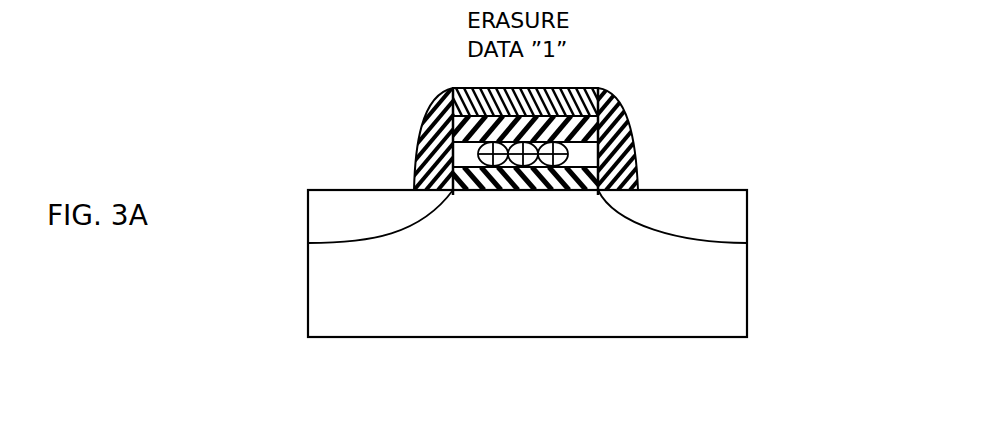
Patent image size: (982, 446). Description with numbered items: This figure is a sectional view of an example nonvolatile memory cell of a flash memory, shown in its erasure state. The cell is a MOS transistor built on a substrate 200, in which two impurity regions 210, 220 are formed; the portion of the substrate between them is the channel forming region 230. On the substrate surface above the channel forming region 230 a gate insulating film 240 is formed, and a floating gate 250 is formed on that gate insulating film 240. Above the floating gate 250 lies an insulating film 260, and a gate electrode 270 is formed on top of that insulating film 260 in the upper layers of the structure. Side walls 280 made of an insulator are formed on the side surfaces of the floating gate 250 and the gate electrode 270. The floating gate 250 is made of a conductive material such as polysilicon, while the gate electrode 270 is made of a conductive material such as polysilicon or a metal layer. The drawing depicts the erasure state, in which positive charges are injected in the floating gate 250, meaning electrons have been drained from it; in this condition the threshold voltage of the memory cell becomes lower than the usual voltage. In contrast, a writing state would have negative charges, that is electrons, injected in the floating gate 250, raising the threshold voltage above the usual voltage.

The substrate 200 is at (732, 323).
The impurity region 210 is at (323, 235).
The impurity region 220 is at (732, 221).
The channel forming region 230 is at (507, 234).
The gate insulating film 240 is at (628, 175).
The floating gate 250 is at (630, 148).
The insulating film 260 is at (618, 121).
The gate electrode 270 is at (598, 90).
The side wall 280 is at (430, 125).